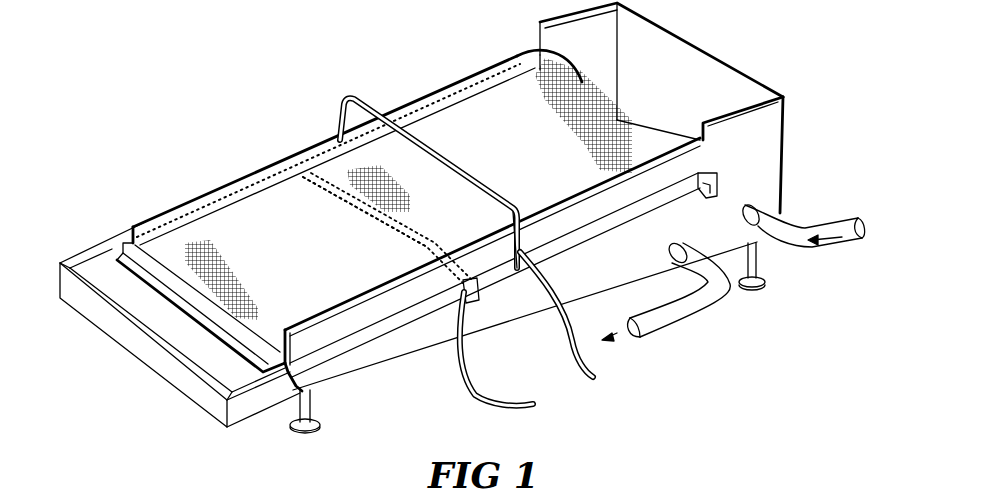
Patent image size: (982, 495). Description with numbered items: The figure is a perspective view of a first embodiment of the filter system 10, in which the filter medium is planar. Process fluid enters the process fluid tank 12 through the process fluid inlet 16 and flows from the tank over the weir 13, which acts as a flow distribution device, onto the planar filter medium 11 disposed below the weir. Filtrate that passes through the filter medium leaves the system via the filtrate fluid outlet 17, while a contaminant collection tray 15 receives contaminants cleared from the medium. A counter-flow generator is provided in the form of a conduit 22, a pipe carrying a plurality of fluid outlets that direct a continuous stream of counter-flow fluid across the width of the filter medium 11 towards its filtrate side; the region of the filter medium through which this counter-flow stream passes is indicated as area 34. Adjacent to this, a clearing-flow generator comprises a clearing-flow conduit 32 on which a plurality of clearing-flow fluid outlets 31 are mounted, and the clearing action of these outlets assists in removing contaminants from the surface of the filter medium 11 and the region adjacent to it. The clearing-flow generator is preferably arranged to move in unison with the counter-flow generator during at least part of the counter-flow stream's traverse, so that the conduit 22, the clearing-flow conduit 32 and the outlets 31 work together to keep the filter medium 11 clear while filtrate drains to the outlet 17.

The filter system 10 is at (165, 173).
The planar filter medium 11 is at (283, 210).
The process fluid tank 12 is at (767, 142).
The weir 13 is at (508, 55).
The contaminant collection tray 15 is at (170, 373).
The process fluid inlet 16 is at (793, 230).
The filtrate fluid outlet 17 is at (692, 310).
The conduit 22 is at (388, 234).
The clearing-flow fluid outlets 31 is at (498, 210).
The clearing-flow conduit 32 is at (357, 95).
The area 34 is at (338, 162).